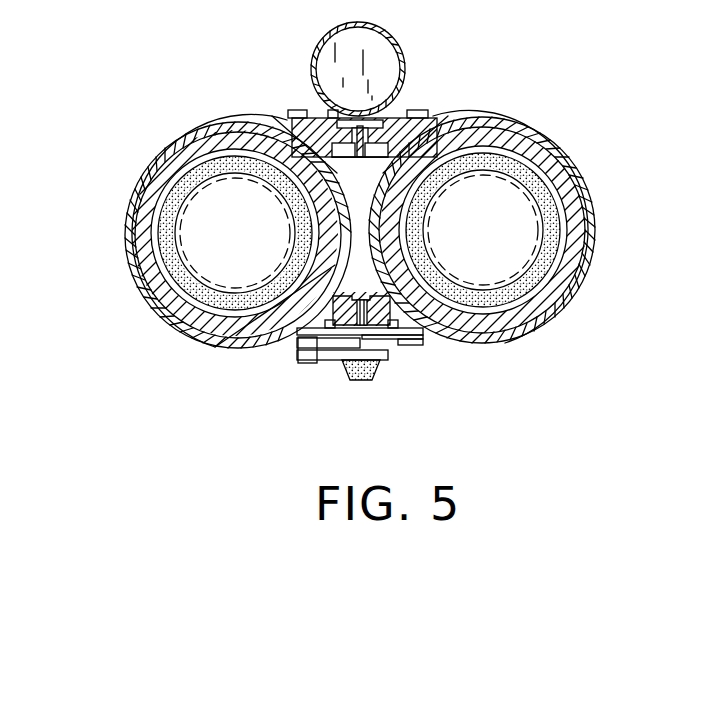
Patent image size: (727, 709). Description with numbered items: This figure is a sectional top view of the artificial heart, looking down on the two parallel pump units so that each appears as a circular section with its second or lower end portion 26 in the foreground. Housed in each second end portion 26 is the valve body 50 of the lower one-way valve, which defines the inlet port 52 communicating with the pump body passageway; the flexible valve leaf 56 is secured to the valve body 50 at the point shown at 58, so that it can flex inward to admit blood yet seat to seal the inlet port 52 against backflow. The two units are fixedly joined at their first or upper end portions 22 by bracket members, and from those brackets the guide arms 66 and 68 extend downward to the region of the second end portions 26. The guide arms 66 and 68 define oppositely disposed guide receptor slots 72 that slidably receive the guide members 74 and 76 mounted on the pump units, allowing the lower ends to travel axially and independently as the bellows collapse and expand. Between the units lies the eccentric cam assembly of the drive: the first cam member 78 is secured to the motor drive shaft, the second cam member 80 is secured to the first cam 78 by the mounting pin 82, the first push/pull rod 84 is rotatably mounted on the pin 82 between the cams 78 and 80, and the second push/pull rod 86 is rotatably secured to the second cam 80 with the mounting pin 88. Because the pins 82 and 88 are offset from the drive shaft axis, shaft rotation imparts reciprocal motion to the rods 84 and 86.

The first or upper end portion 22 is at (334, 63).
The second or lower end portion 26 is at (128, 266).
The valve body 50 is at (520, 141).
The inlet port 52 is at (577, 161).
The flexible valve leaf 56 is at (495, 237).
The valve leaf securement 58 is at (555, 238).
The guide arm 66 is at (228, 339).
The guide arm 68 is at (354, 158).
The guide receptor slots 72 is at (312, 117).
The guide member 74 is at (292, 348).
The guide member 76 is at (296, 118).
The first cam member 78 is at (342, 365).
The second cam member 80 is at (420, 342).
The mounting pin 82 is at (307, 365).
The first push/pull rod 84 is at (298, 352).
The second push/pull rod 86 is at (392, 342).
The mounting pin 88 is at (410, 350).